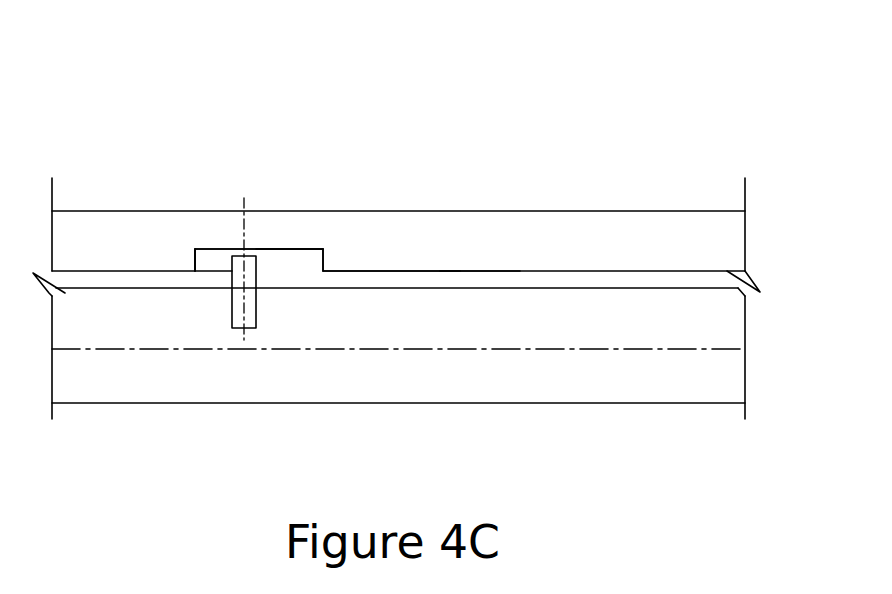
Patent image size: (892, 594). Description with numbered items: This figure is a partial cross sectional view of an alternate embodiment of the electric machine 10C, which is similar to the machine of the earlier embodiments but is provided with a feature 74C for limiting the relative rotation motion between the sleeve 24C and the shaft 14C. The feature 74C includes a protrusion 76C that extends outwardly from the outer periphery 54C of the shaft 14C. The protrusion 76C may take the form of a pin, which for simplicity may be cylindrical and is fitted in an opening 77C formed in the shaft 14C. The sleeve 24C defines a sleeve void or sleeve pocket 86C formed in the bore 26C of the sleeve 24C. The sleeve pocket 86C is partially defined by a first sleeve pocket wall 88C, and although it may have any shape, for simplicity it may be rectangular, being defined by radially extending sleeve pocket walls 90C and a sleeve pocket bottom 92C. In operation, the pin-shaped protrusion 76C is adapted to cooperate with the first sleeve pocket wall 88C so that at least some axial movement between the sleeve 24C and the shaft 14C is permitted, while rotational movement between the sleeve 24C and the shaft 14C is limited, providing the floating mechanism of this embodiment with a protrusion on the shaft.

The electric machine 10C is at (667, 98).
The shaft 14C is at (658, 403).
The sleeve 24C is at (722, 235).
The bore 26C is at (447, 271).
The outer periphery 54C is at (384, 282).
The feature 74C is at (317, 182).
The protrusion 76C is at (258, 268).
The opening 77C is at (226, 283).
The sleeve pocket 86C is at (222, 258).
The first sleeve pocket wall 88C is at (203, 263).
The sleeve pocket walls 90C is at (324, 256).
The sleeve pocket bottom 92C is at (290, 249).